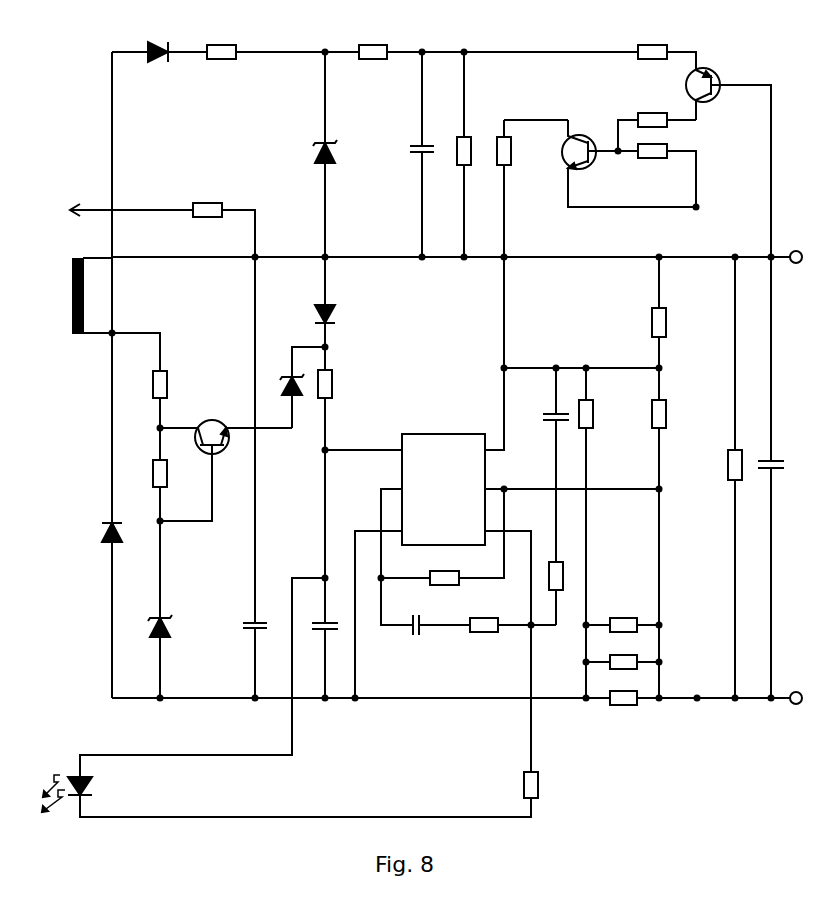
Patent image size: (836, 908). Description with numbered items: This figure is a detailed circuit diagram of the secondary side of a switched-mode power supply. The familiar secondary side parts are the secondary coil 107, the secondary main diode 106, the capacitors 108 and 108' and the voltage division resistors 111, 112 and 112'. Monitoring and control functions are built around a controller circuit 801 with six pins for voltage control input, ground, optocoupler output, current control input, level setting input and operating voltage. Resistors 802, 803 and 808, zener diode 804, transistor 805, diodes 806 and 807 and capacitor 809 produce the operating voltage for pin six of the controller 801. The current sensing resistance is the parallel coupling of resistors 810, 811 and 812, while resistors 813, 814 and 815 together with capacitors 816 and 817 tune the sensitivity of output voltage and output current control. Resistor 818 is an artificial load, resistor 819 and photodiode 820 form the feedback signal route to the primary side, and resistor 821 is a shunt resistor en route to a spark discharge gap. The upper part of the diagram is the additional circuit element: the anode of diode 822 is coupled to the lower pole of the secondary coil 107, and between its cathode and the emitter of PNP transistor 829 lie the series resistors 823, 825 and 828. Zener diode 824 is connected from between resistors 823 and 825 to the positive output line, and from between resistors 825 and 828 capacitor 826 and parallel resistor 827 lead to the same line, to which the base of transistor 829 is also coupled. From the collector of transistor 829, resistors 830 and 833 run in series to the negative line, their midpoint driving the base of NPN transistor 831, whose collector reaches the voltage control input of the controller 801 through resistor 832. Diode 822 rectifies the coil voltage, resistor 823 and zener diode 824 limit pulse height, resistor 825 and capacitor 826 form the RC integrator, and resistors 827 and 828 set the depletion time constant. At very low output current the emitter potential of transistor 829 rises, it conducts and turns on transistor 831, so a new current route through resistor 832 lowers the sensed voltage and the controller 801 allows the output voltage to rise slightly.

The controller circuit 801 is at (443, 477).
The resistor 802 is at (180, 381).
The resistor 803 is at (180, 480).
The zener diode 804 is at (175, 615).
The transistor 805 is at (213, 426).
The diode 806 is at (281, 374).
The diode 807 is at (340, 301).
The resistor 808 is at (345, 385).
The capacitor 809 is at (316, 612).
The resistor 810 is at (623, 688).
The resistor 811 is at (623, 651).
The resistor 812 is at (623, 615).
The resistor 813 is at (448, 567).
The resistor 814 is at (488, 615).
The resistor 815 is at (567, 560).
The capacitor 816 is at (436, 617).
The capacitor 817 is at (543, 406).
The artificial load resistor 818 is at (722, 455).
The resistor 819 is at (550, 785).
The photodiode 820 is at (86, 793).
The shunt resistor 821 is at (211, 200).
The diode 822 is at (158, 39).
The resistor 823 is at (225, 42).
The zener diode 824 is at (339, 164).
The resistor 825 is at (376, 41).
The capacitor 826 is at (412, 163).
The resistor 827 is at (450, 139).
The resistor 828 is at (655, 41).
The PNP transistor 829 is at (722, 78).
The resistor 830 is at (655, 111).
The NPN transistor 831 is at (560, 152).
The resistor 832 is at (520, 164).
The resistor 833 is at (655, 164).
The secondary main diode 106 is at (100, 519).
The secondary coil 107 is at (60, 296).
The capacitor 108 is at (244, 611).
The capacitor 108' is at (789, 478).
The voltage division resistor 111 is at (642, 322).
The voltage division resistor 112 is at (644, 404).
The voltage division resistor 112' is at (605, 426).